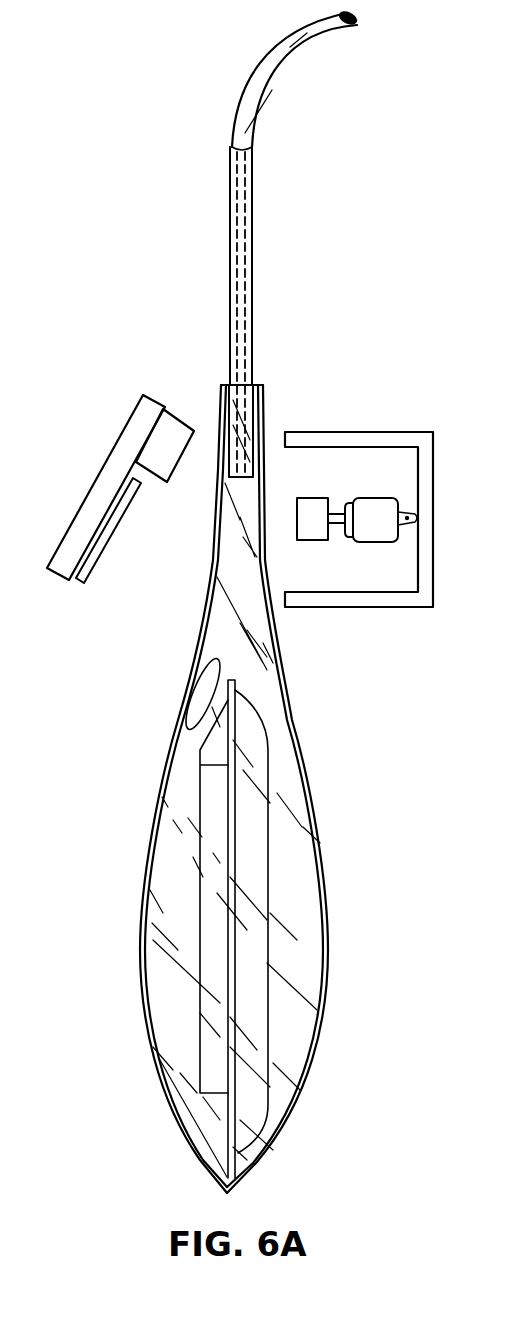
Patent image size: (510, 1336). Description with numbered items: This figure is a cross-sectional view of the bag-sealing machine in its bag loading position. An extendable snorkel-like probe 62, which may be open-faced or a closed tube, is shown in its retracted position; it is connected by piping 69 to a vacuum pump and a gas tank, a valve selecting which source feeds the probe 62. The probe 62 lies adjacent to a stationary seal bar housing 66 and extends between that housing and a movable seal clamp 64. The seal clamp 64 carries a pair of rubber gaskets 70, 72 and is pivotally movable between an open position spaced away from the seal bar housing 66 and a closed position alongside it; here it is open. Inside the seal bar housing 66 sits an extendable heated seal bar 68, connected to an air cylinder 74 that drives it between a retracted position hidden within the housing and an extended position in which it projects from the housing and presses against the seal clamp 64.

The probe 62 is at (253, 233).
The piping 69 is at (271, 80).
The seal clamp 64 is at (132, 432).
The rubber gasket 70 is at (180, 428).
The rubber gasket 72 is at (98, 547).
The seal bar housing 66 is at (385, 600).
The heated seal bar 68 is at (320, 533).
The air cylinder 74 is at (367, 535).